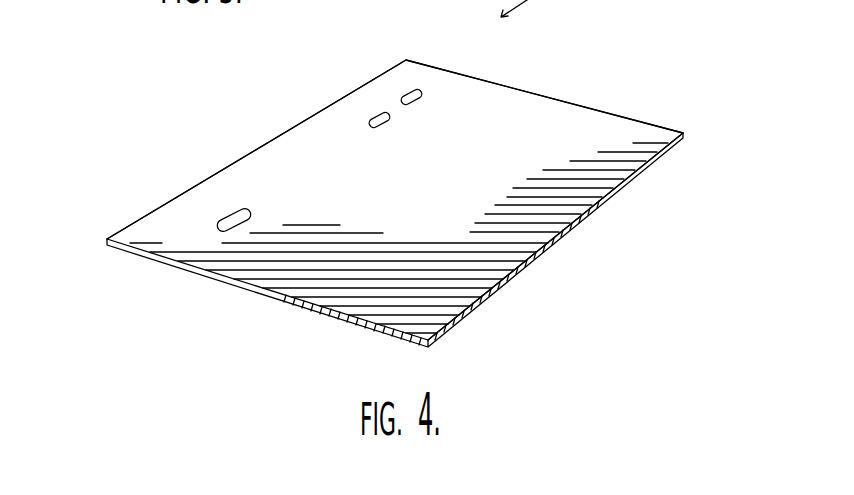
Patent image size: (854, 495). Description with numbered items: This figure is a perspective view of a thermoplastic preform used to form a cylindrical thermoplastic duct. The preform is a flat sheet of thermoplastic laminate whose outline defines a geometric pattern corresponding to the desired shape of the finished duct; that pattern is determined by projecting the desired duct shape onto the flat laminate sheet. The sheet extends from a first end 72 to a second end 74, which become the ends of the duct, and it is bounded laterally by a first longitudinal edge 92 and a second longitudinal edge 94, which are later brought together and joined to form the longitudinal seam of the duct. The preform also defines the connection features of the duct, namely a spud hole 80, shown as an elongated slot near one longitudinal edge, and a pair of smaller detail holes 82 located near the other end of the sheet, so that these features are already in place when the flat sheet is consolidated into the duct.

The first end 72 is at (245, 289).
The second end 74 is at (538, 90).
The spud hole 80 is at (218, 217).
The detail holes 82 is at (403, 96).
The first longitudinal edge 92 is at (280, 134).
The second longitudinal edge 94 is at (487, 300).